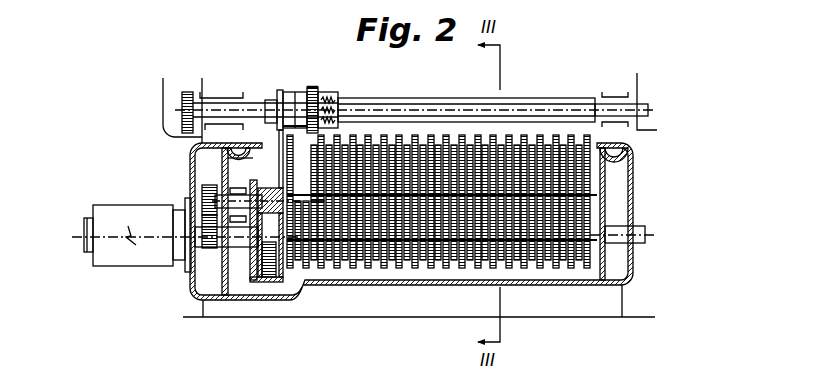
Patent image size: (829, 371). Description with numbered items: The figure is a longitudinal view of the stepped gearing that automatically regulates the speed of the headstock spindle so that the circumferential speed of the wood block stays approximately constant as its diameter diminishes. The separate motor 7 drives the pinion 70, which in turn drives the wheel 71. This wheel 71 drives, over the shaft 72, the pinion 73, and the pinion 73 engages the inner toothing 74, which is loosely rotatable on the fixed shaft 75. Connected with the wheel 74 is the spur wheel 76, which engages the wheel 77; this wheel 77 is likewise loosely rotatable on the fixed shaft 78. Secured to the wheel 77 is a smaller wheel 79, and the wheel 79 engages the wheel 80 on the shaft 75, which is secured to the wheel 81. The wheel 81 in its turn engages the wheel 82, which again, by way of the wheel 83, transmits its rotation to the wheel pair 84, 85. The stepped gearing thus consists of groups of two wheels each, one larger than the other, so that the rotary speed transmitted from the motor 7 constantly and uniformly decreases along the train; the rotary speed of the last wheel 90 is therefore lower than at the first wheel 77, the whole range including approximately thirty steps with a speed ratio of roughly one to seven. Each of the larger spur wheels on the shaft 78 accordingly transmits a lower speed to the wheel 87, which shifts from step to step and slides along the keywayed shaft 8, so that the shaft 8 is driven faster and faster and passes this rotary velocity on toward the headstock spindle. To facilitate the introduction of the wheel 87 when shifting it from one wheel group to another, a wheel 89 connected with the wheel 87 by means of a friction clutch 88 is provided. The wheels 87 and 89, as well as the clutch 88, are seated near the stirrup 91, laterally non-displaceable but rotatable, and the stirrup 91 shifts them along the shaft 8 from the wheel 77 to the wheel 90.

The motor 7 is at (128, 268).
The shaft 8 is at (507, 97).
The pinion 70 is at (206, 249).
The wheel 71 is at (206, 197).
The shaft 72 is at (225, 193).
The pinion 73 is at (267, 190).
The inner toothing 74 is at (270, 284).
The fixed shaft 75 is at (243, 249).
The spur wheel 76 is at (289, 270).
The wheel 77 is at (290, 131).
The fixed shaft 78 is at (239, 157).
The smaller wheel 79 is at (297, 138).
The wheel 80 is at (300, 262).
The wheel 81 is at (307, 270).
The wheel 82 is at (315, 143).
The wheel 83 is at (323, 135).
The wheel 84 is at (316, 262).
The wheel 85 is at (323, 270).
The wheel 87 is at (314, 96).
The friction clutch 88 is at (342, 94).
The wheel 89 is at (324, 92).
The last wheel 90 is at (589, 134).
The stirrup 91 is at (310, 86).